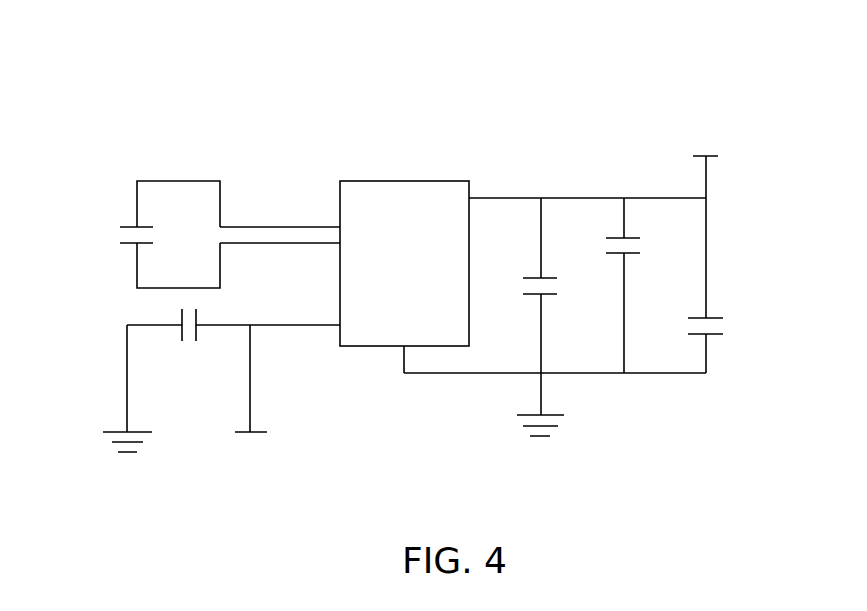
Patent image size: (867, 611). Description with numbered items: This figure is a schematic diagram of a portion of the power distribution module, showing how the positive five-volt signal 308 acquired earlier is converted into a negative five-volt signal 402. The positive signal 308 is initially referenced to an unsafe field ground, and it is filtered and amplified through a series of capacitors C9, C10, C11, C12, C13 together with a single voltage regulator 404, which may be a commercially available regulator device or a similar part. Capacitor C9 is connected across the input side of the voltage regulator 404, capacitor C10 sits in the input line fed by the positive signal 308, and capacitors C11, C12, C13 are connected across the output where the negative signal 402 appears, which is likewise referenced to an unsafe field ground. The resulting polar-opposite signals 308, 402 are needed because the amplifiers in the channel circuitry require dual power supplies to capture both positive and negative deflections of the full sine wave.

The +5V signal 308 is at (253, 473).
The −5V signal 402 is at (707, 117).
The voltage regulator 404 is at (391, 181).
The capacitor C9 is at (212, 234).
The capacitor C10 is at (233, 339).
The capacitor C11 is at (563, 285).
The capacitor C12 is at (645, 285).
The capacitor C13 is at (728, 285).